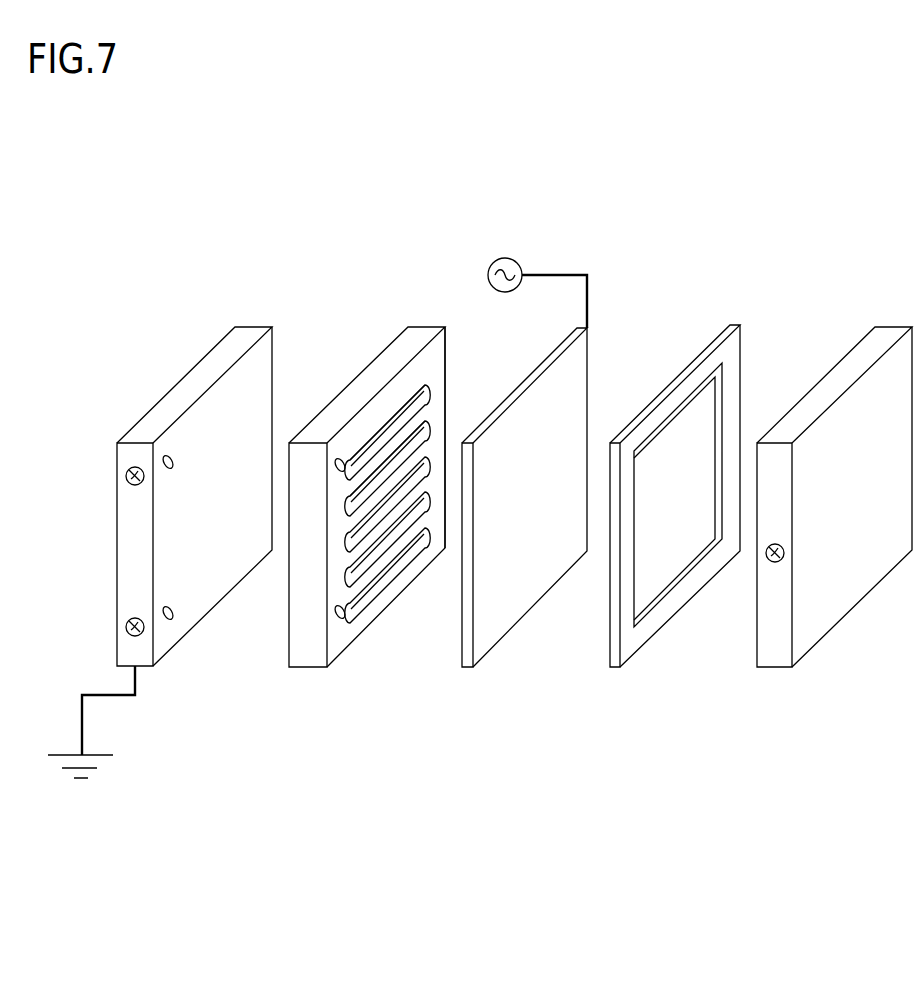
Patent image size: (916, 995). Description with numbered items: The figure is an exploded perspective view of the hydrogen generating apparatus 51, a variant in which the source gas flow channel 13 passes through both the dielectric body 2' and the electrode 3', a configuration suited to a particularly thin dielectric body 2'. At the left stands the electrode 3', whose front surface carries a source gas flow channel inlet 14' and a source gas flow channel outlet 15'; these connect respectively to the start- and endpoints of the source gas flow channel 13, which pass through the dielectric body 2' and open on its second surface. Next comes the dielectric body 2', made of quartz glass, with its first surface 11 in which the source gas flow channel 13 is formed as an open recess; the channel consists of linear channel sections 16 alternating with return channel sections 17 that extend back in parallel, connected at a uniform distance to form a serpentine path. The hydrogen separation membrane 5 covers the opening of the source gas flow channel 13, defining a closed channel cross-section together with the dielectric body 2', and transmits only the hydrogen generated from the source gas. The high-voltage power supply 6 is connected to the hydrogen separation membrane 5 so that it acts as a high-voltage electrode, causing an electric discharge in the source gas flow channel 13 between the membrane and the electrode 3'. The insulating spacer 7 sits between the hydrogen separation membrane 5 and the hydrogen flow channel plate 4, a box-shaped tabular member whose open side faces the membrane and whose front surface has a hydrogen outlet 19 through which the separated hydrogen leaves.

The hydrogen generating apparatus 51 is at (702, 198).
The electrode 3' is at (160, 552).
The source gas flow channel inlet 14' is at (98, 493).
The source gas flow channel outlet 15' is at (98, 643).
The dielectric body 2' is at (395, 486).
The first surface 11 is at (437, 363).
The source gas flow channel 13 is at (377, 577).
The channel section 16 is at (380, 417).
The return channel section 17 is at (400, 427).
The hydrogen separation membrane 5 is at (506, 620).
The high-voltage power supply 6 is at (508, 258).
The insulating spacer 7 is at (675, 384).
The hydrogen flow channel plate 4 is at (822, 385).
The hydrogen outlet 19 is at (773, 563).